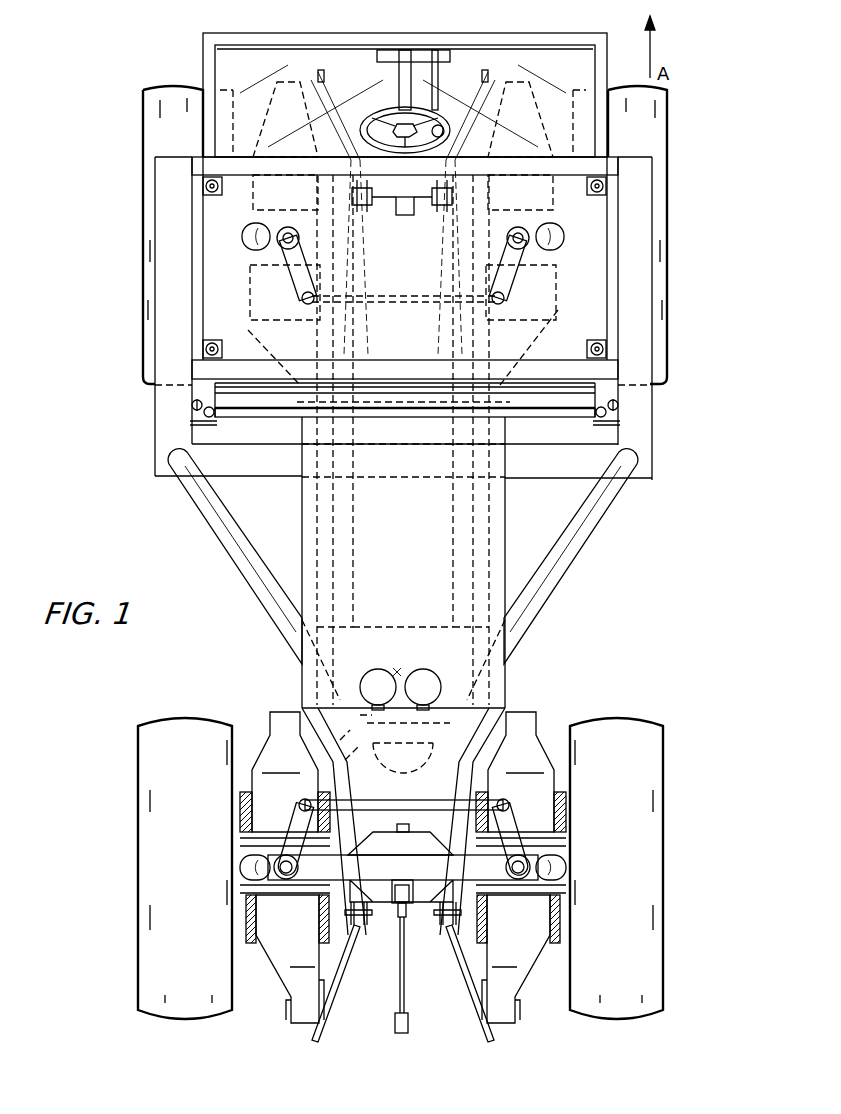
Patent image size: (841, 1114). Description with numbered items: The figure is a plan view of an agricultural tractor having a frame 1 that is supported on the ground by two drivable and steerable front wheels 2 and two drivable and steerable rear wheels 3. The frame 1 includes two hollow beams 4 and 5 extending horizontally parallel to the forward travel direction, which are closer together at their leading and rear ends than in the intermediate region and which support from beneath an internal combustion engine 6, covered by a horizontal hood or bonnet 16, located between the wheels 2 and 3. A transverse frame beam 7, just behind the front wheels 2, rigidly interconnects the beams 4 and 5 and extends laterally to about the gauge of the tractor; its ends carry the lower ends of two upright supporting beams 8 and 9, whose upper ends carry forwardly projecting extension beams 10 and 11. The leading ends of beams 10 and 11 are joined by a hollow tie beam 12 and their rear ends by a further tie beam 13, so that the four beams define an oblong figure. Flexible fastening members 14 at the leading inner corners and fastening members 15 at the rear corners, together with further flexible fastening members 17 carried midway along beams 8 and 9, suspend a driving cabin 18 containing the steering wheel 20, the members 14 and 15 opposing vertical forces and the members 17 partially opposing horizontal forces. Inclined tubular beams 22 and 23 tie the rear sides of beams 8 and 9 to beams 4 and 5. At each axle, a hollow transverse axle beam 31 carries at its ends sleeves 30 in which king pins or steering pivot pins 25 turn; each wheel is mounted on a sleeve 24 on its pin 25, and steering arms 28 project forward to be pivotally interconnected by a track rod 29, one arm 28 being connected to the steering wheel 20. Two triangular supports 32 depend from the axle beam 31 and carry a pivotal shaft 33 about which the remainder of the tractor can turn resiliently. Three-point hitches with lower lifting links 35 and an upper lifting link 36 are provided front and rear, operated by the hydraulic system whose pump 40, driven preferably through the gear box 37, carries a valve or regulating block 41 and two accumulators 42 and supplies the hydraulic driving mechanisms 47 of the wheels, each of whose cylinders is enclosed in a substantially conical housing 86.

The frame 1 is at (330, 548).
The front wheels 2 is at (178, 87).
The rear wheels 3 is at (188, 724).
The hollow beam 4 is at (353, 525).
The hollow beam 5 is at (456, 525).
The internal combustion engine 6 is at (488, 541).
The transverse frame beam 7 is at (535, 478).
The upright supporting beam 8 is at (155, 449).
The upright supporting beam 9 is at (652, 449).
The extension beam 10 is at (155, 296).
The extension beam 11 is at (652, 293).
The tie beam 12 is at (203, 158).
The further tie beam 13 is at (202, 371).
The fastening members 14 is at (210, 197).
The fastening members 15 is at (220, 334).
The hood or bonnet 16 is at (320, 487).
The flexible fastening members 17 is at (212, 421).
The driving cabin 18 is at (291, 32).
The steering wheel 20 is at (382, 108).
The tubular beam 22 is at (258, 597).
The tubular beam 23 is at (560, 590).
The sleeve 24 is at (242, 856).
The king pin or steering pivot pin 25 is at (286, 880).
The steering arms 28 is at (510, 827).
The track rod 29 is at (396, 303).
The sleeve 30 is at (270, 262).
The hollow transverse axle beam 31 is at (378, 935).
The triangular supports 32 is at (430, 883).
The pivotal shaft 33 is at (400, 839).
The lower lifting links 35 is at (318, 84).
The upper lifting link 36 is at (399, 985).
The gear box 37 is at (405, 632).
The pump 40 is at (403, 821).
The valve or regulating block 41 is at (375, 737).
The accumulators 42 is at (412, 672).
The driving mechanisms 47 is at (264, 96).
The housing 86 is at (540, 746).